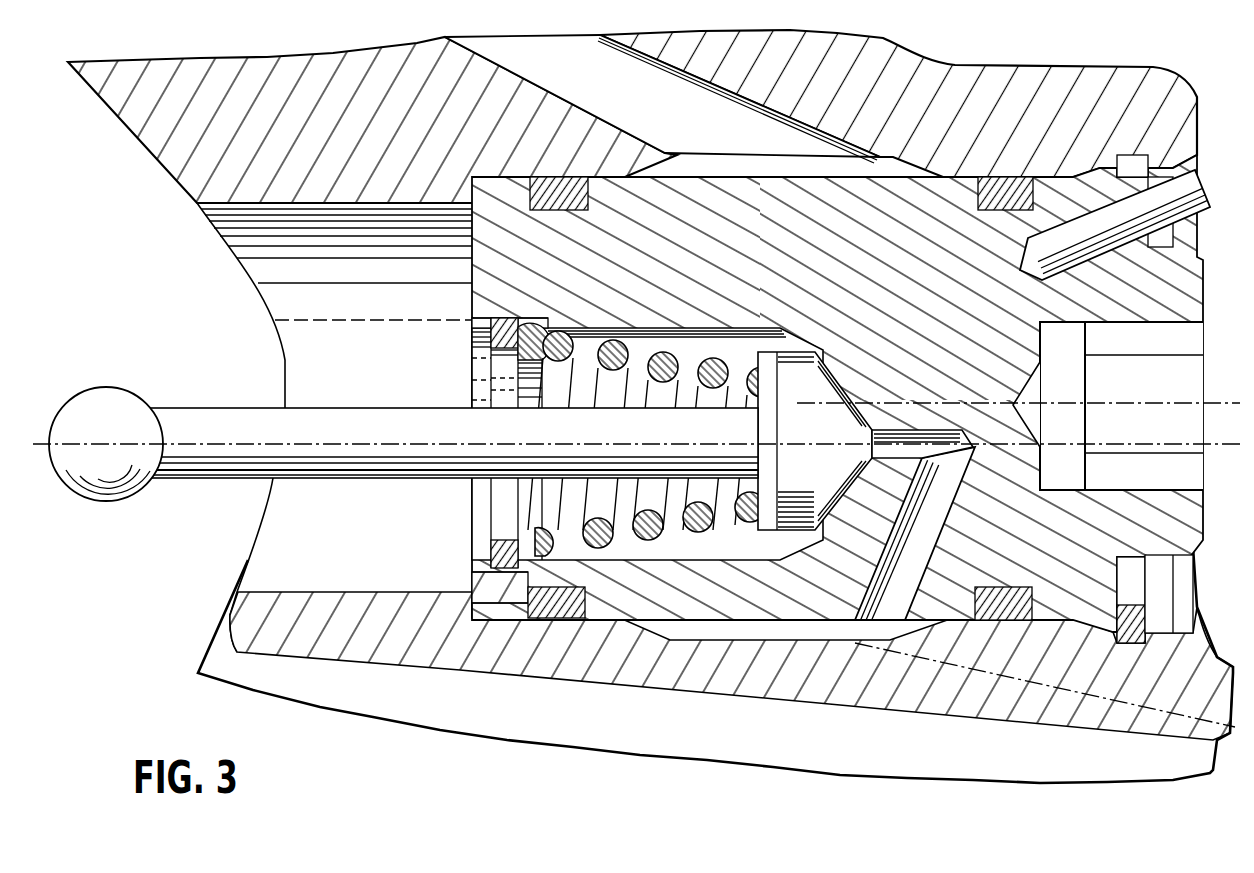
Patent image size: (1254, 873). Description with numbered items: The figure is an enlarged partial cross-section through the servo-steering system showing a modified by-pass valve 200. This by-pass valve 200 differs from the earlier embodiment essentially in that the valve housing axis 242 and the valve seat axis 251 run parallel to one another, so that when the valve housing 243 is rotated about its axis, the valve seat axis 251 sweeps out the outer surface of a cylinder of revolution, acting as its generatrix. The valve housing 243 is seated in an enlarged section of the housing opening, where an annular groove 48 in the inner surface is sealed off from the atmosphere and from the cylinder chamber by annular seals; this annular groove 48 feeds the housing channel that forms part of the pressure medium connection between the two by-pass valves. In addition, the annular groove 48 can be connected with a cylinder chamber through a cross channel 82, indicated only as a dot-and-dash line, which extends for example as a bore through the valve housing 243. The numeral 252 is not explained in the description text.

The annular groove 48 is at (840, 668).
The cross channel 82 is at (993, 676).
The by-pass valve 200 is at (1204, 381).
The valve housing axis 242 is at (891, 402).
The valve housing 243 is at (849, 584).
The valve seat axis 251 is at (313, 440).
The return spring 252 is at (672, 328).